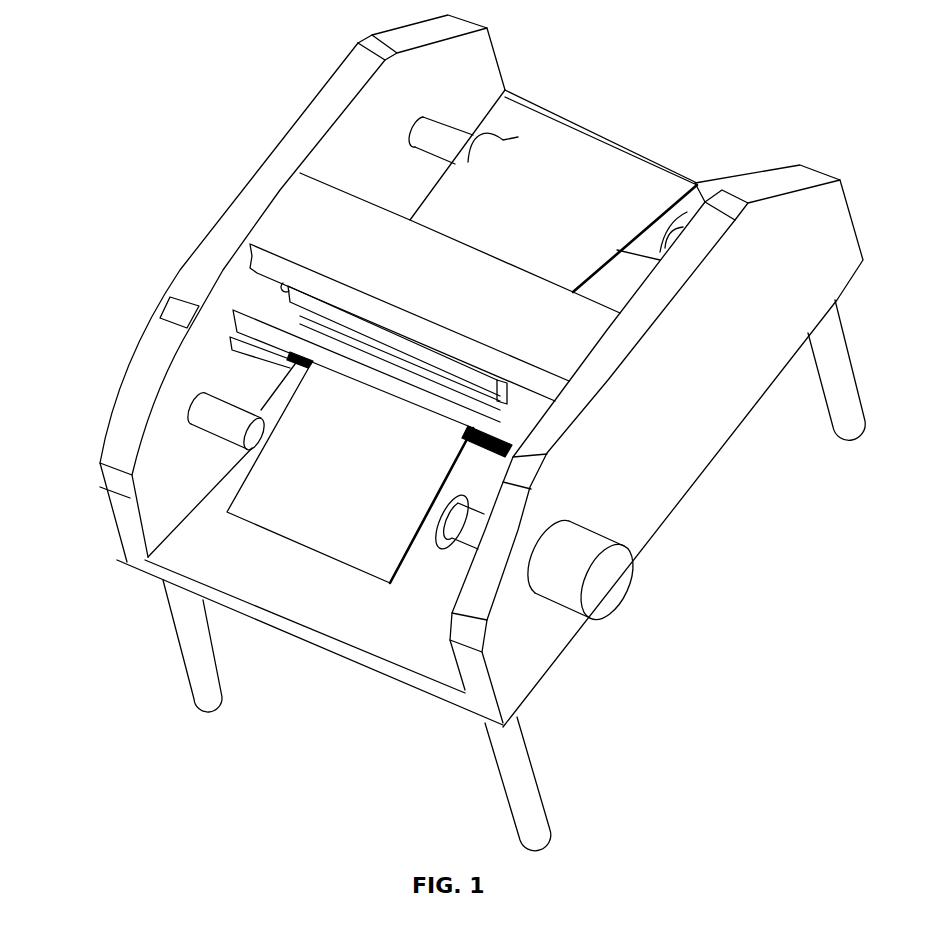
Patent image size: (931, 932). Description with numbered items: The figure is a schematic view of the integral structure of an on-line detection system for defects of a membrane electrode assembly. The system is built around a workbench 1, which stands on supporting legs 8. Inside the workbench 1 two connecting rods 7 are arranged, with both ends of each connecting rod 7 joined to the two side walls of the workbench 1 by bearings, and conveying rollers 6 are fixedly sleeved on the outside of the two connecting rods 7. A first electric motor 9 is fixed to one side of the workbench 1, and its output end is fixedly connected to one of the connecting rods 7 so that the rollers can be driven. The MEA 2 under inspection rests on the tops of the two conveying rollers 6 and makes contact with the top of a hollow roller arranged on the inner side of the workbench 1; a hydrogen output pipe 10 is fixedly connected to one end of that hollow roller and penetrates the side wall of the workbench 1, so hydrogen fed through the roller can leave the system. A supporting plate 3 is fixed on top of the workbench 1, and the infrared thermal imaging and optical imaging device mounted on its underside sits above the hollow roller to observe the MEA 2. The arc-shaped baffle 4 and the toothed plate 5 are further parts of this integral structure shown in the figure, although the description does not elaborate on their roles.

The workbench 1 is at (260, 190).
The MEA 2 is at (487, 213).
The supporting plate 3 is at (315, 270).
The arc-shaped baffle 4 is at (267, 322).
The toothed plate 5 is at (247, 336).
The conveying roller 6 is at (263, 432).
The connecting rod 7 is at (213, 425).
The supporting leg 8 is at (181, 657).
The first electric motor 9 is at (608, 583).
The hydrogen output pipe 10 is at (660, 413).